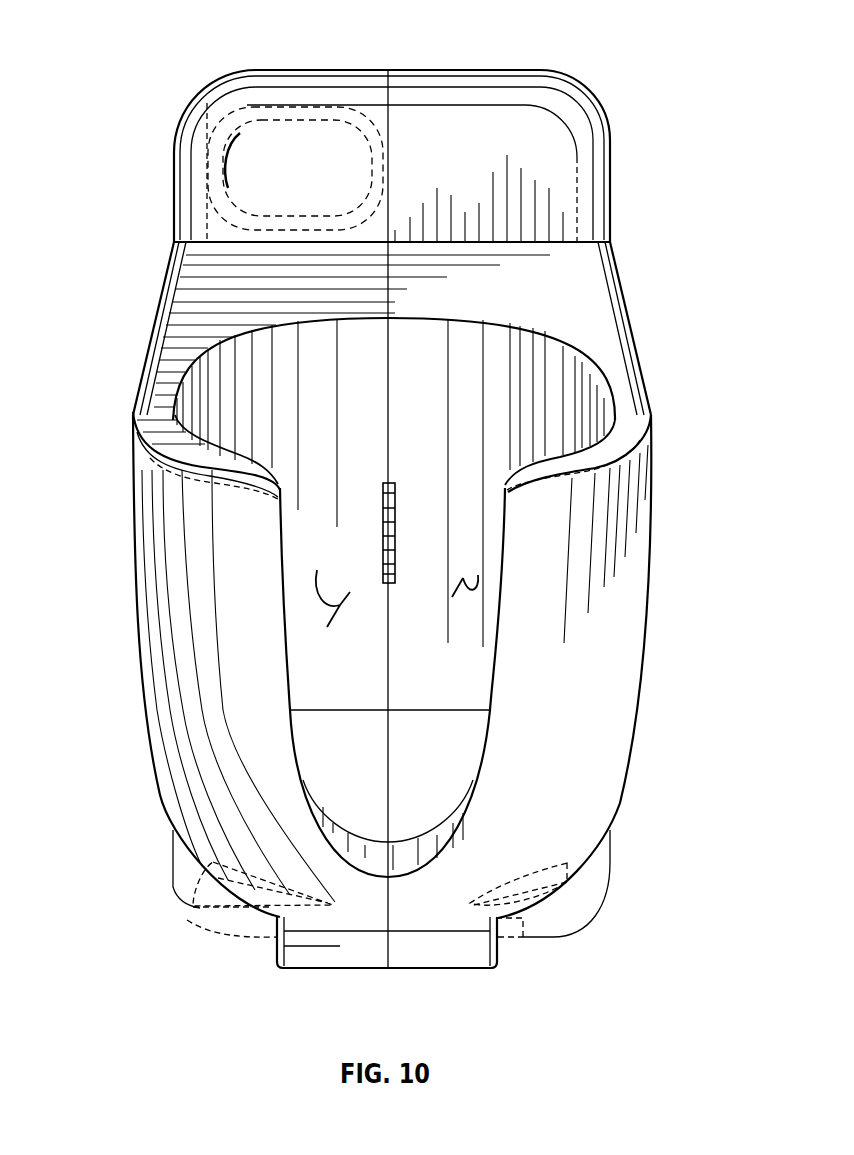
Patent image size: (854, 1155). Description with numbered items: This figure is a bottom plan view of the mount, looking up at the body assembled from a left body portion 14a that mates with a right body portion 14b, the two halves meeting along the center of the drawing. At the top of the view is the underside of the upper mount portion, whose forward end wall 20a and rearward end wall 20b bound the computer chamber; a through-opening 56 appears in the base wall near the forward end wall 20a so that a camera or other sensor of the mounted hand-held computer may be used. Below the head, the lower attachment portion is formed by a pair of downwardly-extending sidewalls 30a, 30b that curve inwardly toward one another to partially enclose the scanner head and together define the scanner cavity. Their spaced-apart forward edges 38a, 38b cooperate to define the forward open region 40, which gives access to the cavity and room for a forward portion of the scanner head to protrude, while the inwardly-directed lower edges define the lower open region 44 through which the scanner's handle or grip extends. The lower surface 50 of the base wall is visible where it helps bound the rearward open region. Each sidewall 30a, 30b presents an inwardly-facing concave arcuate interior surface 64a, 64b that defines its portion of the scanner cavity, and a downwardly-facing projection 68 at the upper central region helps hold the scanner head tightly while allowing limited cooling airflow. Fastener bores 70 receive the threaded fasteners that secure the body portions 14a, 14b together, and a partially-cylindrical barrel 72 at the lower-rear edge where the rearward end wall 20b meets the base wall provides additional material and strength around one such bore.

The left body portion 14a is at (600, 207).
The right body portion 14b is at (178, 172).
The forward end wall 20a is at (440, 70).
The rearward end wall 20b is at (537, 938).
The downwardly-extending sidewall 30a is at (612, 605).
The downwardly-extending sidewall 30b is at (167, 573).
The forward edge 38a is at (620, 428).
The forward edge 38b is at (184, 435).
The forward open region 40 is at (492, 318).
The lower open region 44 is at (480, 678).
The lower surface of base wall 50 is at (520, 134).
The through-opening 56 is at (280, 145).
The arcuate interior surface 64a is at (463, 580).
The arcuate interior surface 64b is at (328, 580).
The downwardly-facing projection 68 is at (397, 518).
The fastener bore 70 is at (270, 892).
The partially-cylindrical barrel 72 is at (405, 968).